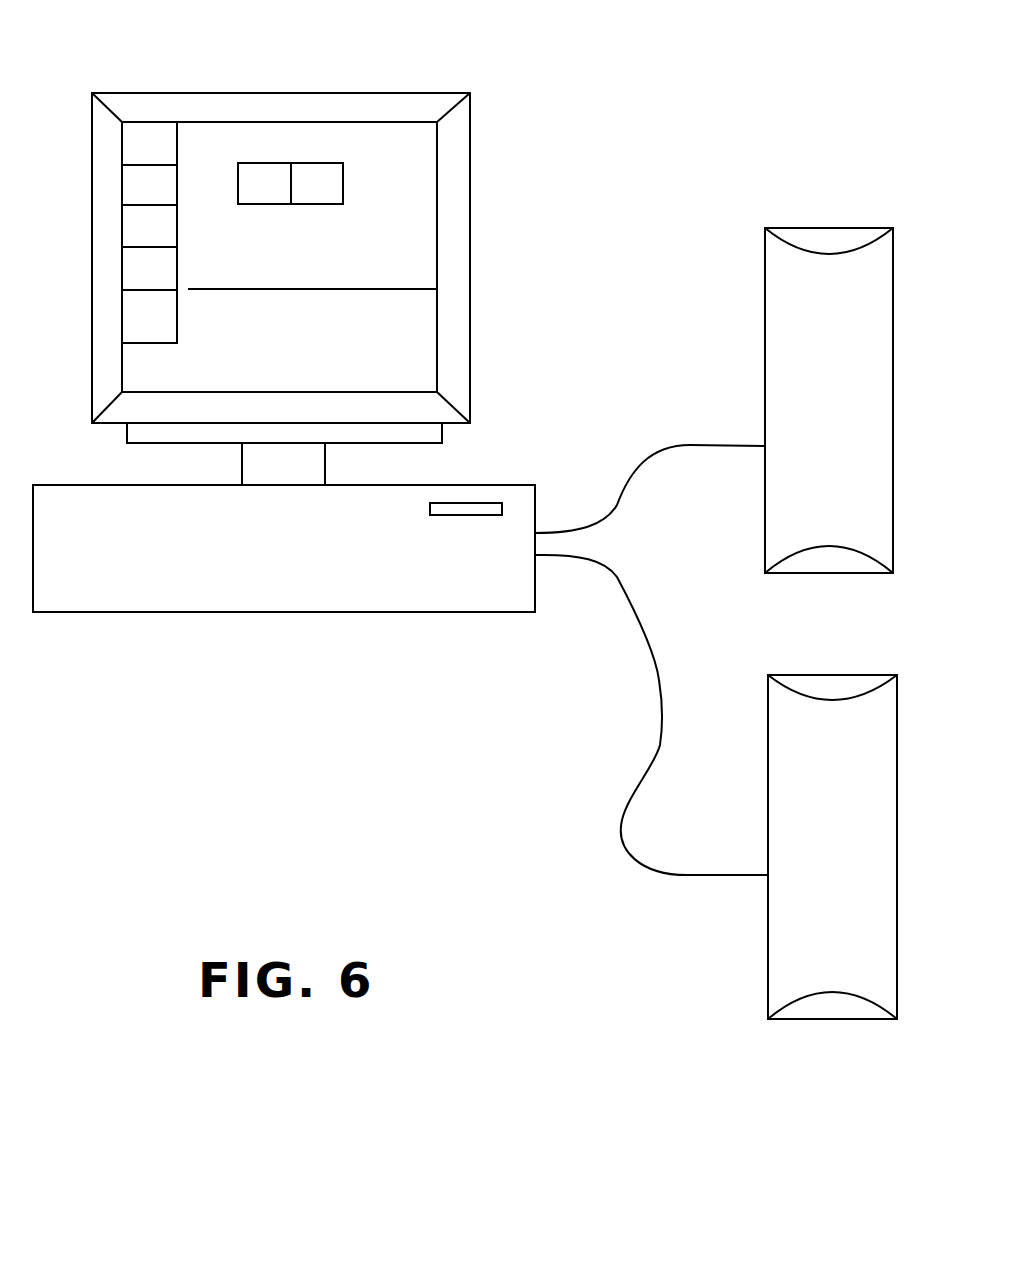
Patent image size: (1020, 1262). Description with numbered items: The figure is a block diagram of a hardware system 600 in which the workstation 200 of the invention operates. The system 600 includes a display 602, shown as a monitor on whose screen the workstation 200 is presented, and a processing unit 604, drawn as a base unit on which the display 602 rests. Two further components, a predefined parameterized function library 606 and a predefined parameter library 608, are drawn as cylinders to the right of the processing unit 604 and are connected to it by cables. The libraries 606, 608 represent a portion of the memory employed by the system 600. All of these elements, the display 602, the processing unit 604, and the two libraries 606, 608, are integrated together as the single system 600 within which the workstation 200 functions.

The hardware system 600 is at (782, 44).
The workstation 200 is at (297, 122).
The display 602 is at (470, 293).
The processing unit 604 is at (235, 605).
The predefined parameterized function library 606 is at (763, 258).
The predefined parameter library 608 is at (773, 977).